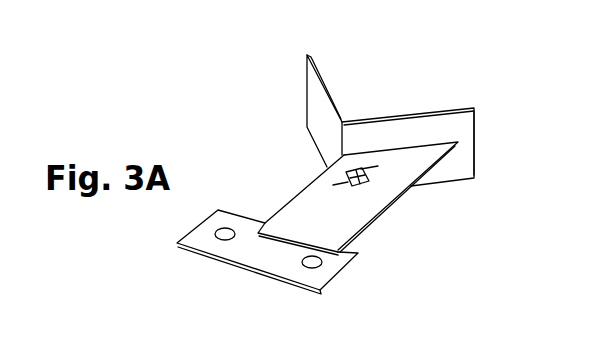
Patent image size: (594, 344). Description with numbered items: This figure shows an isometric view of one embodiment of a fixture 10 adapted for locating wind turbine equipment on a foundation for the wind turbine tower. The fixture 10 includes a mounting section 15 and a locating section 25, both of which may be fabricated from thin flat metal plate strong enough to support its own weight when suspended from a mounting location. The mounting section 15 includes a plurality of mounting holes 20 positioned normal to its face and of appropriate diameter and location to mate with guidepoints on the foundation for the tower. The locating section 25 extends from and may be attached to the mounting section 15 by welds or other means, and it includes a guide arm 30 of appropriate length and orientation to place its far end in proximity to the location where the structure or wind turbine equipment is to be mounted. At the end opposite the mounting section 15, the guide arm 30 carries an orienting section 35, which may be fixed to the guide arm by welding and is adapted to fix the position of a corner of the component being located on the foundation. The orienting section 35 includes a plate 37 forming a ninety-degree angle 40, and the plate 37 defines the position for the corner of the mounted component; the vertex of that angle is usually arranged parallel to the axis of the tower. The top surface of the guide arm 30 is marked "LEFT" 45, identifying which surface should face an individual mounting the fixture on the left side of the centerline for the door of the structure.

The fixture 10 is at (209, 88).
The mounting section 15 is at (330, 283).
The mounting holes 20 is at (205, 233).
The locating section 25 is at (297, 93).
The guide arm 30 is at (378, 218).
The orienting section 35 is at (333, 86).
The plate 37 is at (475, 143).
The 90-degree angle 40 is at (353, 114).
The "LEFT" marking 45 is at (372, 188).